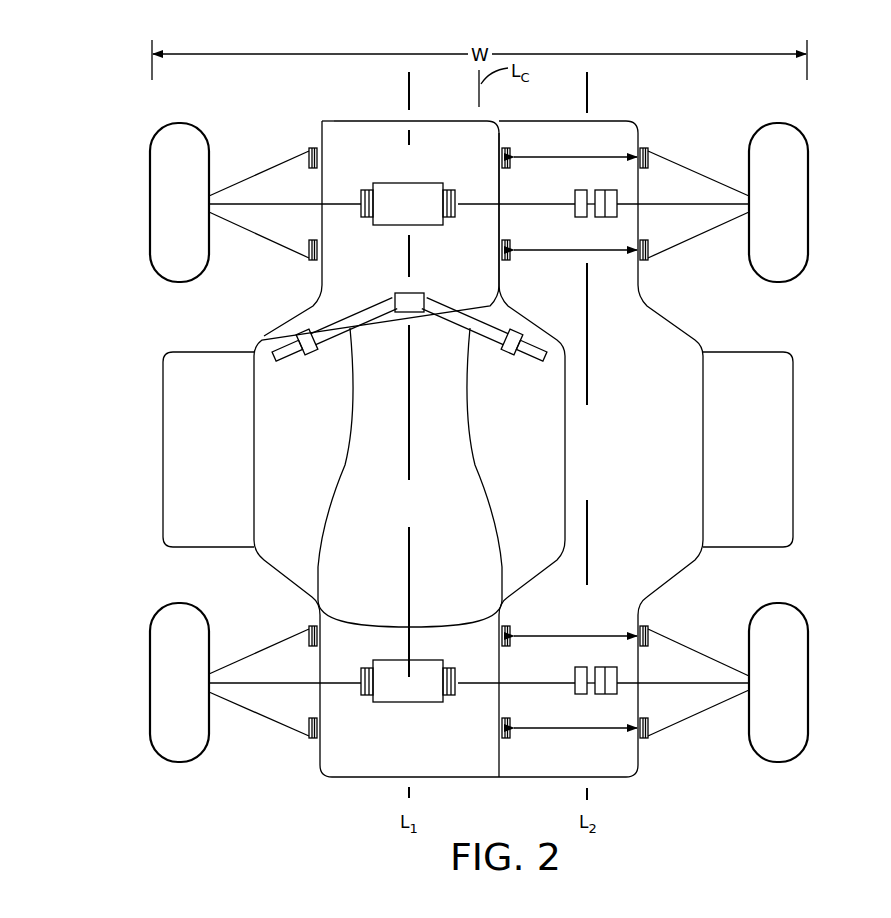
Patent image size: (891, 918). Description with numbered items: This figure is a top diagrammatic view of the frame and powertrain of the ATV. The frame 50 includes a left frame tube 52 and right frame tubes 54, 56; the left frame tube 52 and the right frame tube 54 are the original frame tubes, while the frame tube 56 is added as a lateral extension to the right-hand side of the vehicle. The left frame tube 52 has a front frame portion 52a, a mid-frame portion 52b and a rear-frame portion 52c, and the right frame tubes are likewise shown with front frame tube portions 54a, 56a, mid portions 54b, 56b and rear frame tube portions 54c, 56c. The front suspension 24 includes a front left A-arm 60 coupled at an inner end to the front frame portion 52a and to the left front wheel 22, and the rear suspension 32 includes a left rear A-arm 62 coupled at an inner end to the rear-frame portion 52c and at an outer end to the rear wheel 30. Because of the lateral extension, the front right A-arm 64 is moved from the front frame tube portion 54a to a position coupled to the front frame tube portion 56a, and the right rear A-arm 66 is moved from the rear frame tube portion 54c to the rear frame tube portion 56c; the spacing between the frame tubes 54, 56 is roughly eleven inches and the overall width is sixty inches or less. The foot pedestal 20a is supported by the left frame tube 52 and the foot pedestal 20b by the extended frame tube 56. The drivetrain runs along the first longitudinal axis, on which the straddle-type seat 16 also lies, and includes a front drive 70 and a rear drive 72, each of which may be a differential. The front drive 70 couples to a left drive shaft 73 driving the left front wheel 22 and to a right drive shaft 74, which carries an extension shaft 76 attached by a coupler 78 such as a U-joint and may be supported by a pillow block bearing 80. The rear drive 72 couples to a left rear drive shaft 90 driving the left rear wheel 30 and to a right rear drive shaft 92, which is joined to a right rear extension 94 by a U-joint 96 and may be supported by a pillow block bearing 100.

The straddle-type seat 16 is at (400, 519).
The foot pedestal 20a is at (182, 382).
The foot pedestal 20b is at (795, 493).
The front wheels 22 is at (132, 195).
The front suspension 24 is at (479, 163).
The rear wheels 30 is at (133, 699).
The rear suspension 32 is at (479, 698).
The frame 50 is at (481, 435).
The left frame tube 52 is at (342, 435).
The front frame portion 52a is at (321, 131).
The mid-frame portion 52b is at (254, 478).
The rear-frame portion 52c is at (316, 655).
The right frame tube 54 is at (570, 451).
The front frame tube portion 54a is at (503, 148).
The mid-frame portion of right frame tube 54b is at (570, 489).
The rear frame tube portion 54c is at (503, 746).
The frame tube 56 is at (638, 449).
The front frame tube portion 56a is at (639, 197).
The mid portion of extension frame tube 56b is at (706, 422).
The rear frame tube portion 56c is at (640, 746).
The front left A-arm 60 is at (243, 176).
The left rear A-arm 62 is at (238, 701).
The front right A-arm 64 is at (717, 160).
The right rear A-arm 66 is at (682, 635).
The front drive 70 is at (415, 178).
The rear drive 72 is at (394, 704).
The left drive shaft 73 is at (342, 195).
The right drive shaft 74 is at (468, 190).
The extension shaft 76 is at (677, 212).
The coupler 78 is at (613, 178).
The pillow block bearing 80 is at (584, 177).
The left rear drive shaft 90 is at (273, 691).
The right rear drive shaft 92 is at (479, 687).
The right rear extension 94 is at (683, 691).
The U-joint 96 is at (603, 658).
The pillow block bearing 100 is at (586, 701).